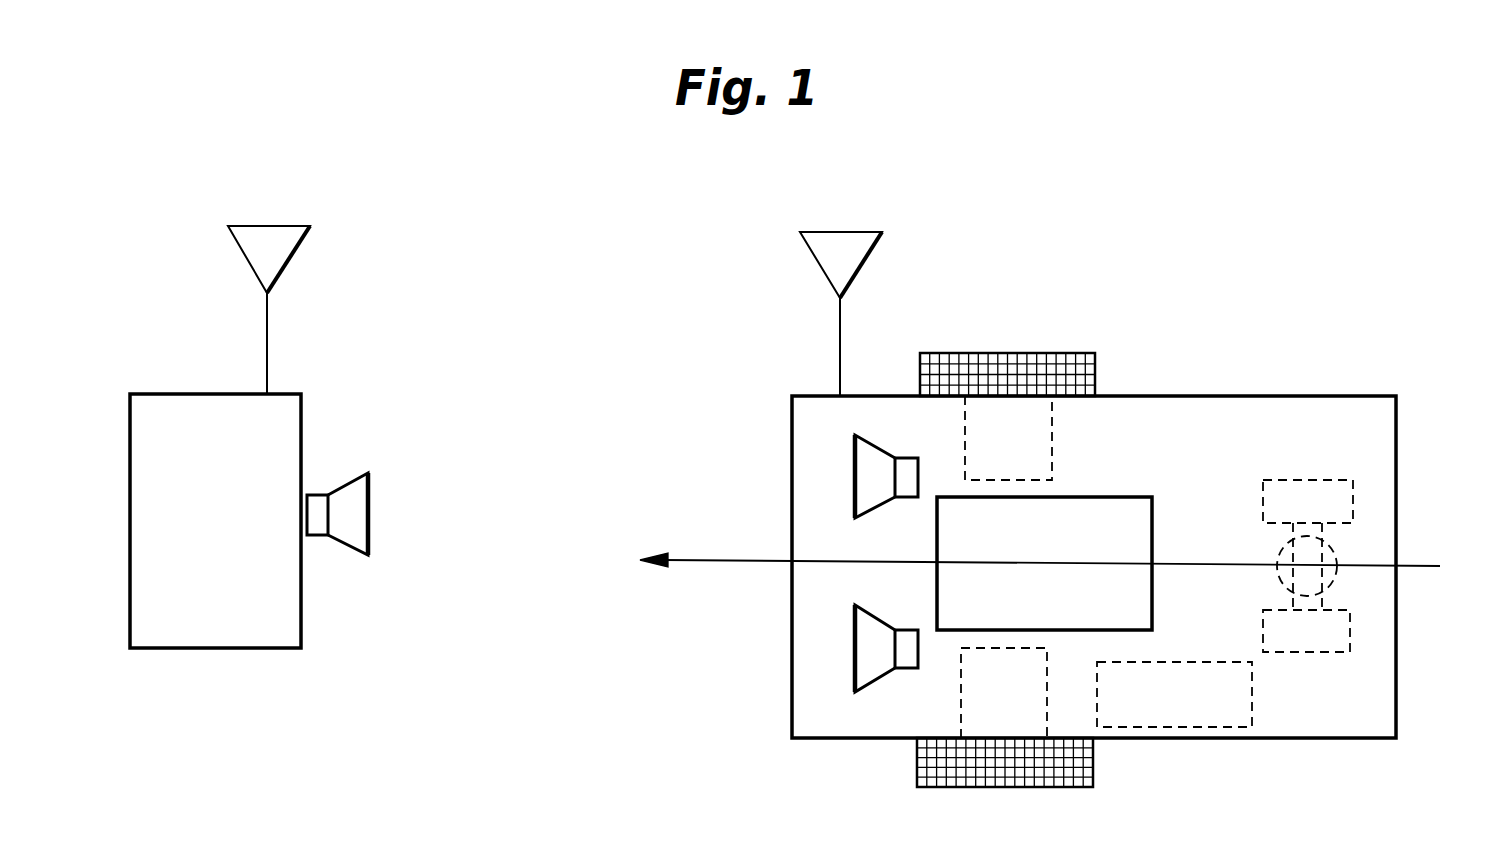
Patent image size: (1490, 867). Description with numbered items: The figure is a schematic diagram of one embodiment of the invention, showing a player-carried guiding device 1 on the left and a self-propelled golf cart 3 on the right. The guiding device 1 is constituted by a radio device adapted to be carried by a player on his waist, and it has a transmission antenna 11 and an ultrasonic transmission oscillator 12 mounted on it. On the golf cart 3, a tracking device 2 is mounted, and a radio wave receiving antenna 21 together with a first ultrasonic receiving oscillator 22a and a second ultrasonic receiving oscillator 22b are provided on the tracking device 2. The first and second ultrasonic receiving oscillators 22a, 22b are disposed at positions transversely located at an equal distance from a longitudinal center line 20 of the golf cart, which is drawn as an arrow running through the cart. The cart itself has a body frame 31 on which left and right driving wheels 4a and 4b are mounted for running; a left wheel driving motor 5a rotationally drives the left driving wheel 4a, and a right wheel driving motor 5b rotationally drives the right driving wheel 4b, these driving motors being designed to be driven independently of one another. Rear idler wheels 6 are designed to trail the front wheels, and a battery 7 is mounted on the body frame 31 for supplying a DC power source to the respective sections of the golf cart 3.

The guiding device 1 is at (153, 394).
The transmission antenna 11 is at (308, 232).
The ultrasonic transmission oscillator 12 is at (346, 478).
The tracking device 2 is at (1152, 523).
The longitudinal center line 20 is at (1413, 566).
The radio wave receiving antenna 21 is at (813, 258).
The first ultrasonic receiving oscillator 22a is at (855, 663).
The second ultrasonic receiving oscillator 22b is at (855, 458).
The golf cart 3 is at (1118, 509).
The body frame 31 is at (1259, 397).
The left driving wheel 4a is at (1068, 787).
The right driving wheel 4b is at (1070, 353).
The left wheel driving motor 5a is at (965, 686).
The right wheel driving motor 5b is at (1052, 458).
The rear idler wheels 6 is at (1350, 646).
The battery 7 is at (1178, 725).